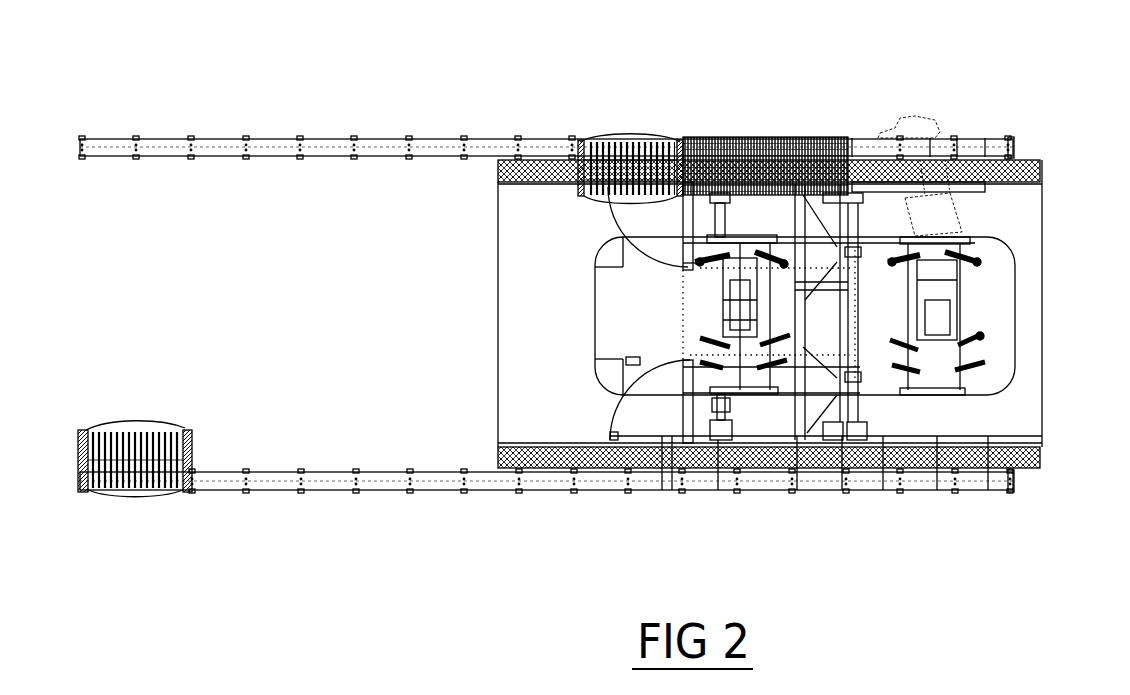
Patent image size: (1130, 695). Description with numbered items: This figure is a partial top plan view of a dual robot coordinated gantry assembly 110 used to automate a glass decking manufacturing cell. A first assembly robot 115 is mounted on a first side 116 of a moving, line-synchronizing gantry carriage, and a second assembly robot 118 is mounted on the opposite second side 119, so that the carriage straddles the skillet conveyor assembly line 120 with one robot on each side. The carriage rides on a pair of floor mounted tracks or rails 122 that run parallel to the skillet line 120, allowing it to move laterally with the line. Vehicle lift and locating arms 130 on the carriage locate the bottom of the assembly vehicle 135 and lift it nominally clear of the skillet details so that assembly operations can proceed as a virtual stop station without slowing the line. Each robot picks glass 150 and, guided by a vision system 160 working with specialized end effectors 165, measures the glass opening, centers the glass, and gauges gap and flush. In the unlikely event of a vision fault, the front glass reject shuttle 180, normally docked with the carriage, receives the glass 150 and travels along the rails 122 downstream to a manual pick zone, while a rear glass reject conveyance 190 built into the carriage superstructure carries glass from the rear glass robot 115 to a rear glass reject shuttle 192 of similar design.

The dual robot coordinated gantry assembly 110 is at (972, 118).
The first assembly robot 115 is at (998, 308).
The first side 116 is at (770, 96).
The second assembly robot 118 is at (630, 312).
The second side 119 is at (770, 520).
The skillet conveyor assembly line 120 is at (705, 303).
The tracks or rails 122 is at (546, 290).
The vehicle lift and locating arms 130 is at (729, 475).
The assembly vehicle 135 is at (699, 316).
The glass 150 is at (182, 407).
The vision system 160 is at (1030, 351).
The specialized end effectors 165 is at (997, 219).
The front glass reject shuttle 180 is at (191, 439).
The rear glass reject conveyance 190 is at (707, 132).
The rear glass reject shuttle 192 is at (580, 147).